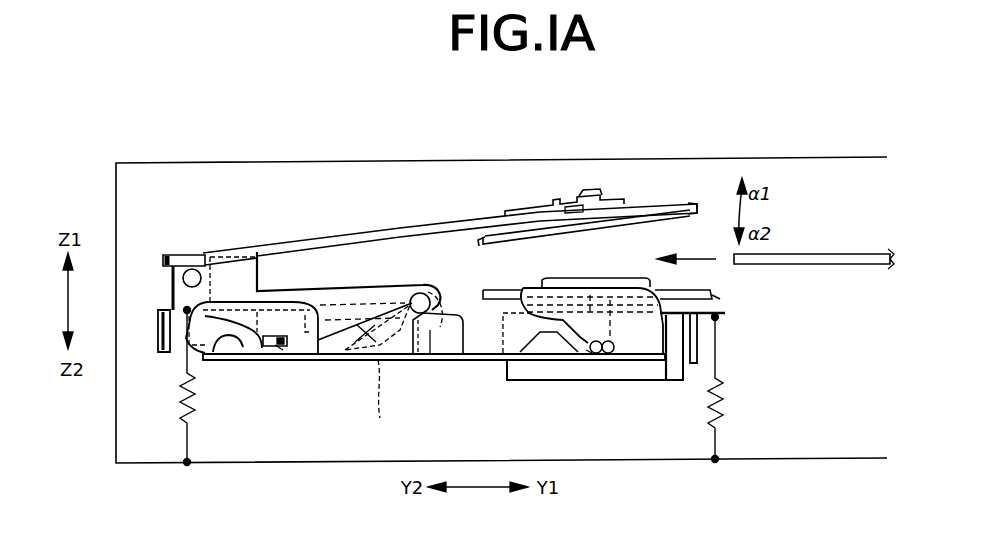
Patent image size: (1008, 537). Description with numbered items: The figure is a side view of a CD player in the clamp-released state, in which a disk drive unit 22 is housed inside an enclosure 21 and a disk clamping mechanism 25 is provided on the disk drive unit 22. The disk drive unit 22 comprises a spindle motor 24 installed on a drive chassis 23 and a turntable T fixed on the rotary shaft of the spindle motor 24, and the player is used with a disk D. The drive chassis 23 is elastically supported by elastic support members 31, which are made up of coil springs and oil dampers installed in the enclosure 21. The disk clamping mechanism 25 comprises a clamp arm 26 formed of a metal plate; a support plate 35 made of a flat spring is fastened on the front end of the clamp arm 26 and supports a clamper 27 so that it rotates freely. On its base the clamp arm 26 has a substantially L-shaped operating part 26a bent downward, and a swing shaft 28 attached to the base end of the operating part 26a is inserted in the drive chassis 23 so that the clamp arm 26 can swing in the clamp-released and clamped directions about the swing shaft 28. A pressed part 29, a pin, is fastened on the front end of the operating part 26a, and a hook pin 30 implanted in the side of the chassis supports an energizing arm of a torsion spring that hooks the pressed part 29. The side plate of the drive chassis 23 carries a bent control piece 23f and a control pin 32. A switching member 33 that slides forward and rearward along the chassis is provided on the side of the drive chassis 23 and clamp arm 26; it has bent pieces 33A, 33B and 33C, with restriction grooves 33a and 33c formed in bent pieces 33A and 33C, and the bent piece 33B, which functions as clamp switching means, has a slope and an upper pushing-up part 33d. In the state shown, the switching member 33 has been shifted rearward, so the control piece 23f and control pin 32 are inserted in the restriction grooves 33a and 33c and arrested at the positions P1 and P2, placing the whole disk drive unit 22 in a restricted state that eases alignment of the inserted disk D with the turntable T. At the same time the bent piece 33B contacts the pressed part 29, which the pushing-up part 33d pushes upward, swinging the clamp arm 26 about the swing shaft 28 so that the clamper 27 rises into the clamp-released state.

The enclosure 21 is at (443, 161).
The disk drive unit 22 is at (724, 303).
The drive chassis 23 is at (727, 320).
The control piece 23f is at (262, 347).
The spindle motor 24 is at (542, 368).
The disk clamping mechanism 25 is at (677, 203).
The clamp arm 26 is at (367, 233).
The operating part 26a is at (307, 291).
The clamper 27 is at (645, 209).
The swing shaft 28 is at (192, 278).
The pressed part 29 is at (427, 357).
The hook pin 30 is at (365, 372).
The elastic support member 31 is at (185, 400).
The control pin 32 is at (605, 354).
The switching member 33 is at (643, 337).
The restriction groove 33a is at (500, 340).
The bent piece 33A is at (668, 340).
The bent piece 33B is at (455, 345).
The restriction groove 33c is at (232, 345).
The bent piece 33C is at (280, 347).
The pushing-up part 33d is at (455, 298).
The support plate 35 is at (528, 205).
The disk D is at (820, 253).
The turntable T is at (710, 295).
The arrested position P1 is at (580, 352).
The arrested position P2 is at (268, 350).